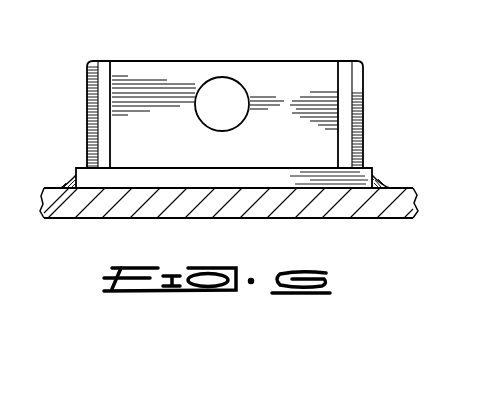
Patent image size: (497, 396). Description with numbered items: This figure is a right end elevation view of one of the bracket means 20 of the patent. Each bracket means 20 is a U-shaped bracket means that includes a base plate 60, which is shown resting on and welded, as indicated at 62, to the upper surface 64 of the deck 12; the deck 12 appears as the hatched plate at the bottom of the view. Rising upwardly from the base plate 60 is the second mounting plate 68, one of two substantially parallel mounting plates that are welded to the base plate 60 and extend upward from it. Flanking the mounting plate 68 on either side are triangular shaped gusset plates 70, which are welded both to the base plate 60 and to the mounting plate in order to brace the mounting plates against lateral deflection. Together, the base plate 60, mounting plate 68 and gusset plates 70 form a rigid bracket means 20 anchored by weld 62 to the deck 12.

The deck 12 is at (263, 214).
The bracket means 20 is at (246, 55).
The base plate 60 is at (195, 170).
The weld 62 is at (68, 183).
The upper surface 64 is at (52, 186).
The second mounting plate 68 is at (187, 68).
The gusset plates 70 is at (104, 66).